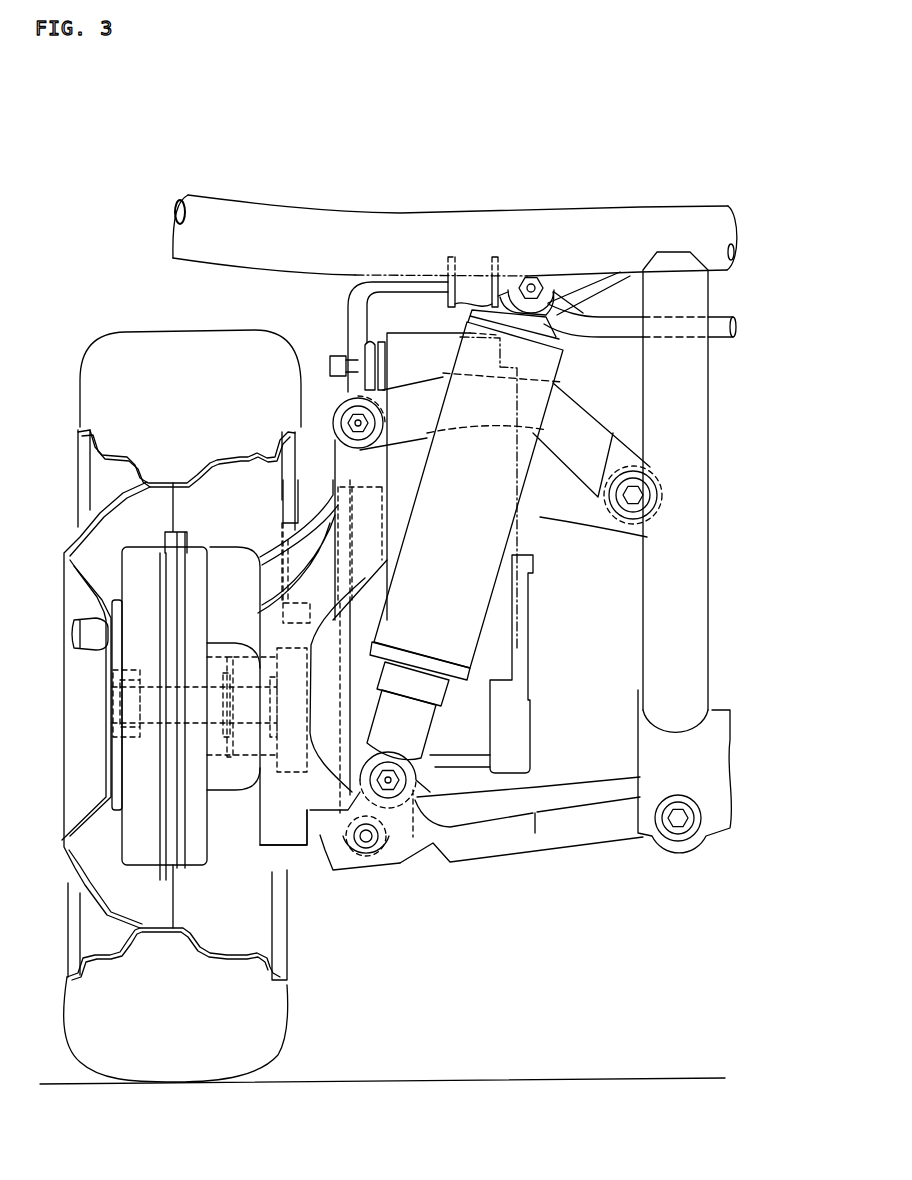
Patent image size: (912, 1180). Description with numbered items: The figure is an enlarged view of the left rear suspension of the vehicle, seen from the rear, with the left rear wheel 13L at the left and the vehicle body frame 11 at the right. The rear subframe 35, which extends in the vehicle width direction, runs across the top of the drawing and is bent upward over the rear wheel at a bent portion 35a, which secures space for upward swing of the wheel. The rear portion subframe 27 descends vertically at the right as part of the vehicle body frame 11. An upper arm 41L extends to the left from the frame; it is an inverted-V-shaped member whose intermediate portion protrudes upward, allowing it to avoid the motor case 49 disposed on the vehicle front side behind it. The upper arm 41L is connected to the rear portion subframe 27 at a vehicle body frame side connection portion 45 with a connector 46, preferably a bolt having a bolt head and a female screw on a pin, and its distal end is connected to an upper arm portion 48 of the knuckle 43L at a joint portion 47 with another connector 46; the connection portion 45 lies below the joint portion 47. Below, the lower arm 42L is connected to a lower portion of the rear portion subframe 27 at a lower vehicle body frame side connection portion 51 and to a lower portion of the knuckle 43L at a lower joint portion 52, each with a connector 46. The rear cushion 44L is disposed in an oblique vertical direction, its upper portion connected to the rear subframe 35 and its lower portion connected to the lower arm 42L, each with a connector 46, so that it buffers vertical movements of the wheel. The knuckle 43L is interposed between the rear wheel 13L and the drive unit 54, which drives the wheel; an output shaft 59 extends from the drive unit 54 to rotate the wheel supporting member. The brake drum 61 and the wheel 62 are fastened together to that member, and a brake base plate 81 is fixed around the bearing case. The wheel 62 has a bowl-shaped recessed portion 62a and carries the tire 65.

The vehicle body frame 11 is at (655, 196).
The rear wheel 13L is at (108, 325).
The rear portion subframe 27 is at (685, 645).
The rear subframe 35 is at (540, 228).
The bent portion 35a is at (333, 243).
The upper arm 41L is at (585, 425).
The lower arm 42L is at (567, 835).
The knuckle 43L is at (292, 845).
The rear cushion 44L is at (490, 508).
The vehicle body frame side connection portion 45 is at (640, 476).
The connector 46 is at (690, 825).
The joint portion 47 is at (338, 358).
The upper arm portion 48 is at (345, 468).
The motor case 49 is at (421, 352).
The lower vehicle body frame side connection portion 51 is at (678, 845).
The lower joint portion 52 is at (370, 850).
The drive unit 54 is at (535, 617).
The output shaft 59 is at (158, 730).
The brake drum 61 is at (137, 852).
The wheel 62 is at (64, 553).
The bowl-shaped recessed portion 62a is at (250, 945).
The tire 65 is at (82, 394).
The brake base plate 81 is at (190, 862).